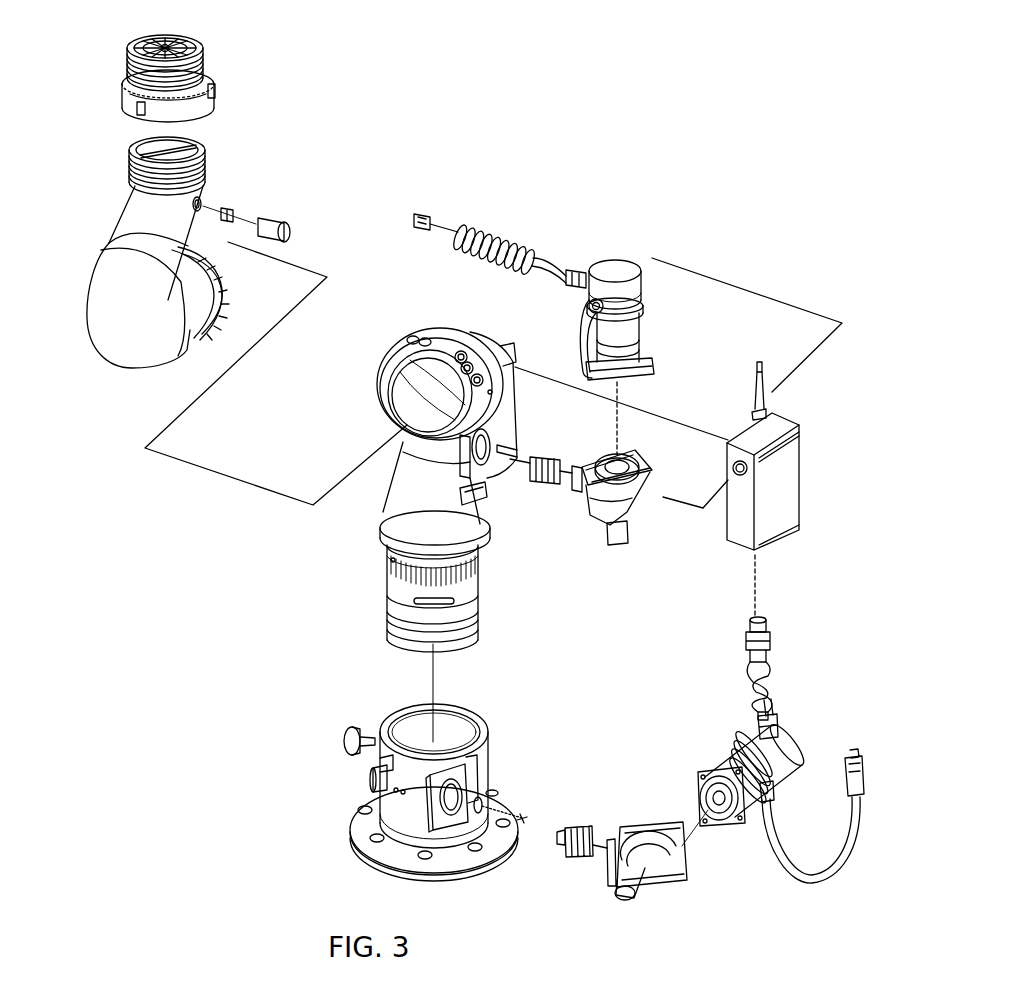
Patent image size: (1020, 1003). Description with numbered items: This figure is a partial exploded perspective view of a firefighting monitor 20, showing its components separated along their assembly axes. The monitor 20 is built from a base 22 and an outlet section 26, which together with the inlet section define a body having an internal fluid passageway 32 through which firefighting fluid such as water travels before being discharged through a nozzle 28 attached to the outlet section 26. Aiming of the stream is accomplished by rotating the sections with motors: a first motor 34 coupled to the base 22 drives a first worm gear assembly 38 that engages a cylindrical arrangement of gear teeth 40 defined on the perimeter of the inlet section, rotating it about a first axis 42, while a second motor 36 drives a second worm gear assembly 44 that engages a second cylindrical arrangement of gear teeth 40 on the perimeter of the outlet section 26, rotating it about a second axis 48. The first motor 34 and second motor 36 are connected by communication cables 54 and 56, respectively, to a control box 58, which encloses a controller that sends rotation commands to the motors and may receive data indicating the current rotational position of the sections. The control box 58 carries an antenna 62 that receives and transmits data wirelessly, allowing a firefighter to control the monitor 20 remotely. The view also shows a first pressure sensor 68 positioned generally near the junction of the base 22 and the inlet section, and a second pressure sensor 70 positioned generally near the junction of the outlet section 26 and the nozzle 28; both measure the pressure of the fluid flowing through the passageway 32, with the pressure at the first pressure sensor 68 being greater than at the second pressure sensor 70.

The firefighting monitor 20 is at (597, 95).
The base 22 is at (494, 760).
The outlet section 26 is at (120, 368).
The nozzle 28 is at (216, 71).
The internal fluid passageway 32 is at (190, 147).
The first motor 34 is at (726, 730).
The second motor 36 is at (554, 315).
The first worm gear assembly 38 is at (574, 856).
The cylindrical arrangement of gear teeth 40 is at (482, 568).
The first axis 42 is at (430, 674).
The second worm gear assembly 44 is at (543, 455).
The second axis 48 is at (347, 473).
The communication cable 54 is at (778, 667).
The communication cable 56 is at (574, 344).
The control box 58 is at (793, 456).
The antenna 62 is at (766, 410).
The first pressure sensor 68 is at (348, 736).
The second pressure sensor 70 is at (292, 236).